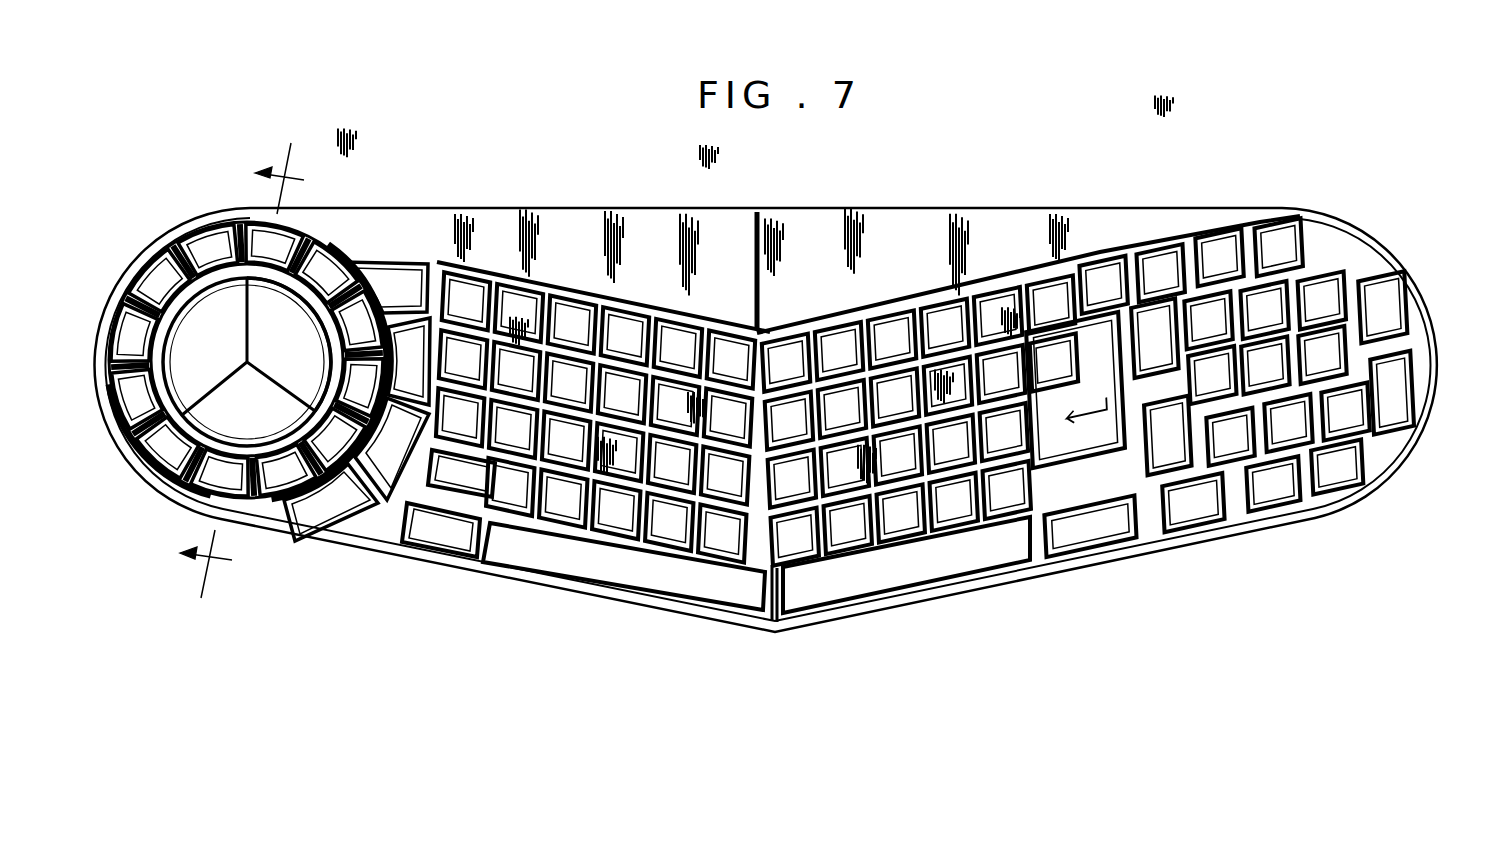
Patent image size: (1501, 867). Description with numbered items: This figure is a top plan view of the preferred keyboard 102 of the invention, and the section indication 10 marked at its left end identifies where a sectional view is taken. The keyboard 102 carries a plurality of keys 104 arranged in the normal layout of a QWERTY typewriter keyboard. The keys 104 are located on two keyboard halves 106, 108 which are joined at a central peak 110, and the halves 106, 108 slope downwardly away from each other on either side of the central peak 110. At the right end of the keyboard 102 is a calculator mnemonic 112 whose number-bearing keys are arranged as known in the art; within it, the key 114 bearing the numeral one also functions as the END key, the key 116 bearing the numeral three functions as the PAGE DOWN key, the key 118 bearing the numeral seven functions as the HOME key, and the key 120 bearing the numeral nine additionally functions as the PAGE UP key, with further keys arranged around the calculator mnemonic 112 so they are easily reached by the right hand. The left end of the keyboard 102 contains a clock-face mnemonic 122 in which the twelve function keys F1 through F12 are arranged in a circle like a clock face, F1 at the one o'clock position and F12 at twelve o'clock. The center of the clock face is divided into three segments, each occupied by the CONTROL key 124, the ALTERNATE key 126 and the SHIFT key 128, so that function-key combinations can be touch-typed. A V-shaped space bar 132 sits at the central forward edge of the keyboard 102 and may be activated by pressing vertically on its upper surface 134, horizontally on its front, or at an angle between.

The section line 10 is at (231, 366).
The keyboard 102 is at (1347, 218).
The keys 104 is at (922, 409).
The keyboard half 106 is at (627, 217).
The keyboard half 108 is at (1007, 217).
The central peak 110 is at (780, 624).
The calculator mnemonic 112 is at (1392, 393).
The key bearing numeral 1 114 is at (1272, 365).
The key bearing numeral 3 116 is at (1345, 411).
The key bearing numeral 7 118 is at (1208, 320).
The key bearing numeral 9 120 is at (1322, 300).
The clock-face mnemonic 122 is at (172, 497).
The CONTROL key 124 is at (204, 369).
The ALTERNATE key 126 is at (313, 390).
The SHIFT key 128 is at (137, 462).
The V-shaped space bar 132 is at (667, 605).
The upper surface 134 is at (832, 594).